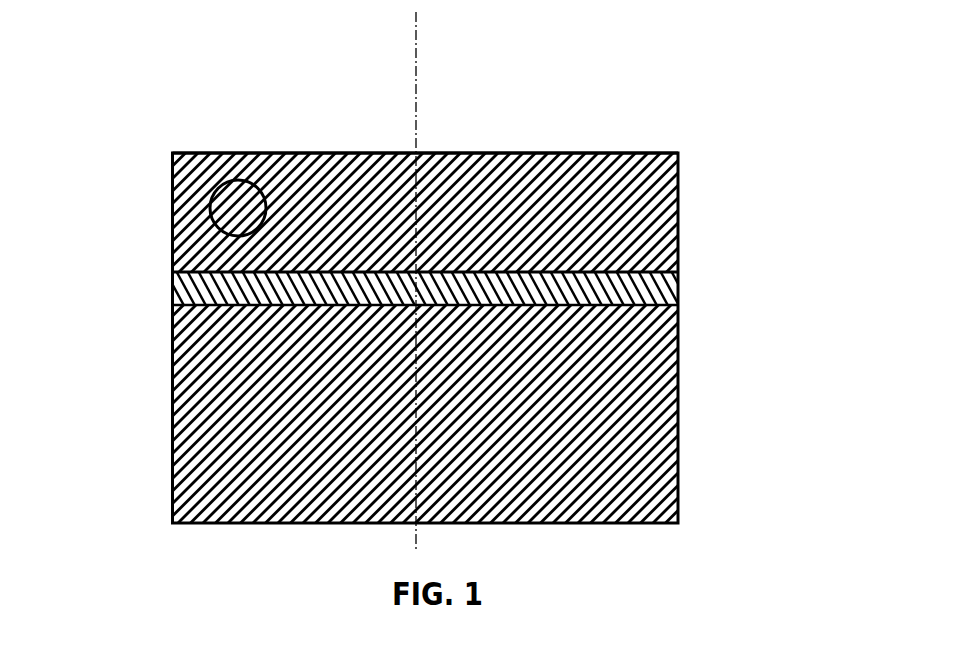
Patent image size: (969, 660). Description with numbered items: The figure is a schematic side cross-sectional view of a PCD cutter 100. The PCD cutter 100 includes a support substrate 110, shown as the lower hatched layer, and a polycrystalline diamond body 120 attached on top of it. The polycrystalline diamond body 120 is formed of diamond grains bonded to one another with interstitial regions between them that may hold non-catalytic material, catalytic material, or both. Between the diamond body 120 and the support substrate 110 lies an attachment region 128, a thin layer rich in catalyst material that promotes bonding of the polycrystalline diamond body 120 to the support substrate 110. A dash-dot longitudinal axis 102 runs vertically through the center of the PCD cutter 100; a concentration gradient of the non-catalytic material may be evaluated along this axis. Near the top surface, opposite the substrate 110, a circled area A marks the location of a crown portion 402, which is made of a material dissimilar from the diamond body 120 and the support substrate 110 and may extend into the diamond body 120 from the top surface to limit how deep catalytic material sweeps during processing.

The PCD cutter 100 is at (705, 103).
The longitudinal axis 102 is at (418, 78).
The support substrate 110 is at (677, 412).
The polycrystalline diamond body 120 is at (682, 213).
The attachment region 128 is at (173, 293).
The crown portion 402 is at (282, 153).
The region A is at (238, 179).